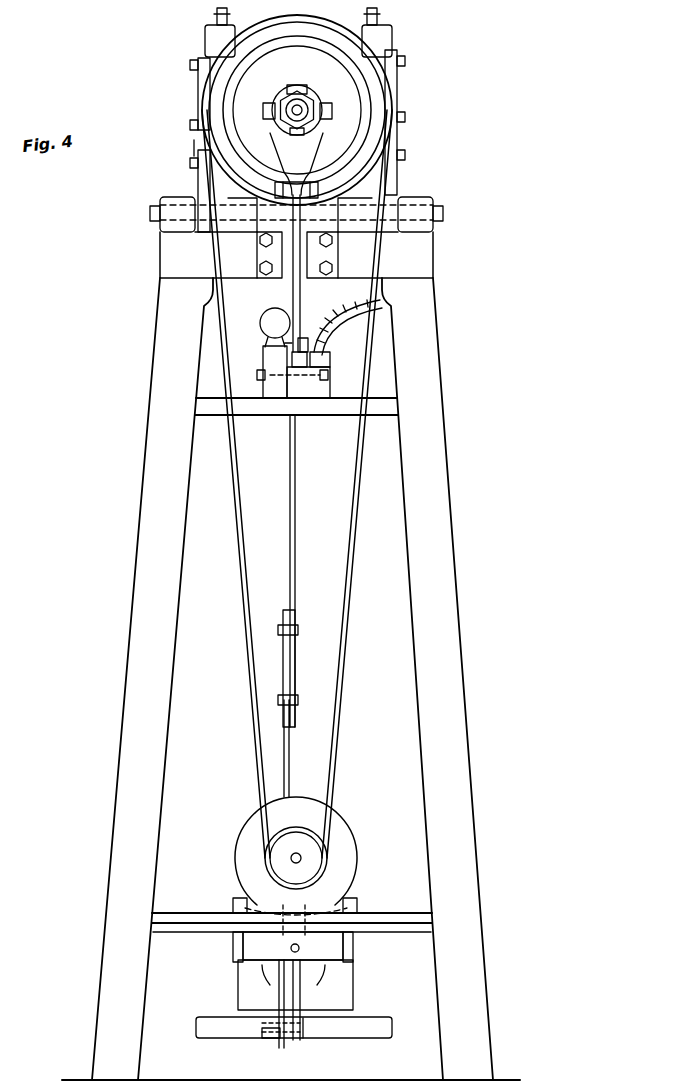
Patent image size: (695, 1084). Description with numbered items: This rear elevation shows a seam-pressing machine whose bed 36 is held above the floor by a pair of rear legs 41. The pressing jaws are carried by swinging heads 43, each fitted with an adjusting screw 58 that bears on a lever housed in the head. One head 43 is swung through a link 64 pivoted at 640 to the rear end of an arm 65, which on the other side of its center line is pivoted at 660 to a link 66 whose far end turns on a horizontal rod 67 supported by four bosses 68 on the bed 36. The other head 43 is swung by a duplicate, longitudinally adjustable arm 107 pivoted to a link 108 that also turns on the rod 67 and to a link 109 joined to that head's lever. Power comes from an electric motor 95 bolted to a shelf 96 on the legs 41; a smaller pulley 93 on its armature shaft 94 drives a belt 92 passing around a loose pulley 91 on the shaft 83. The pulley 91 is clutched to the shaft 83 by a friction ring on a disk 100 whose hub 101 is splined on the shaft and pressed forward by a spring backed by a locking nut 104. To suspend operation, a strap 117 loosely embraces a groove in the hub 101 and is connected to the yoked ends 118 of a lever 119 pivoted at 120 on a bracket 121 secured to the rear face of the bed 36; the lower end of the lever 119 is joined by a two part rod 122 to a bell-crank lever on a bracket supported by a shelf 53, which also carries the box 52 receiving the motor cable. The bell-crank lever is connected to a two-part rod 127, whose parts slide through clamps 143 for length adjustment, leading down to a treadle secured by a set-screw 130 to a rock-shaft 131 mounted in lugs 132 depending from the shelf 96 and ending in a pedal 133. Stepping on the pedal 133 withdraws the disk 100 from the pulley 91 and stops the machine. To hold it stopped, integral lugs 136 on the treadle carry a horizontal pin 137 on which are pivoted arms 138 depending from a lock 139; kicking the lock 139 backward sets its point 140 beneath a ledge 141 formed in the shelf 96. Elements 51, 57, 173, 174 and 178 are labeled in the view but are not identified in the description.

The bed 36 is at (425, 268).
The rear legs 41 is at (150, 422).
The swinging head 43 is at (212, 38).
The flexible conduit 51 is at (332, 328).
The box 52 is at (264, 368).
The shelf 53 is at (340, 405).
The switch 57 is at (270, 310).
The adjusting screw 58 is at (227, 13).
The link 64 is at (198, 78).
The arm 65 is at (191, 176).
The link 66 is at (198, 185).
The horizontal rod 67 is at (150, 211).
The bosses 68 is at (165, 197).
The shaft 83 is at (324, 118).
The loose pulley 91 is at (370, 102).
The belt 92 is at (336, 760).
The smaller pulley 93 is at (320, 836).
The armature shaft 94 is at (300, 857).
The electric motor 95 is at (352, 864).
The shelf 96 is at (432, 918).
The disk 100 is at (355, 110).
The hub 101 is at (282, 100).
The locking nut 104 is at (316, 100).
The longitudinally adjustable arm 107 is at (400, 160).
The link 108 is at (400, 176).
The link 109 is at (400, 66).
The strap 117 is at (297, 84).
The yoked ends 118 is at (276, 118).
The lever 119 is at (302, 300).
The pivot 120 is at (315, 183).
The bracket 121 is at (283, 183).
The two part rod 122 is at (266, 337).
The two-part rod 127 is at (296, 520).
The set-screw 130 is at (300, 952).
The rock-shaft 131 is at (240, 958).
The lugs 132 is at (235, 942).
The pedal 133 is at (378, 1020).
The integral lugs 136 is at (282, 1048).
The horizontal pin 137 is at (265, 1038).
The arms 138 is at (305, 1040).
The lock 139 is at (238, 992).
The point 140 is at (356, 902).
The ledge 141 is at (232, 904).
The clamps 143 is at (294, 690).
The pin 173 is at (293, 398).
The block 174 is at (305, 398).
The lever 178 is at (323, 1018).
The pivot 640 is at (192, 124).
The pivot 660 is at (196, 160).